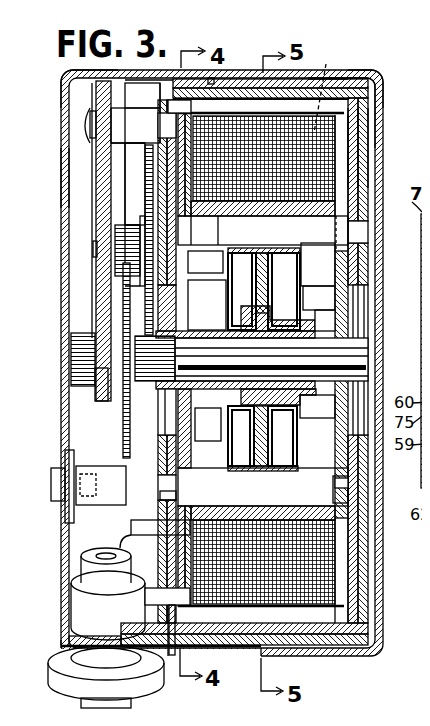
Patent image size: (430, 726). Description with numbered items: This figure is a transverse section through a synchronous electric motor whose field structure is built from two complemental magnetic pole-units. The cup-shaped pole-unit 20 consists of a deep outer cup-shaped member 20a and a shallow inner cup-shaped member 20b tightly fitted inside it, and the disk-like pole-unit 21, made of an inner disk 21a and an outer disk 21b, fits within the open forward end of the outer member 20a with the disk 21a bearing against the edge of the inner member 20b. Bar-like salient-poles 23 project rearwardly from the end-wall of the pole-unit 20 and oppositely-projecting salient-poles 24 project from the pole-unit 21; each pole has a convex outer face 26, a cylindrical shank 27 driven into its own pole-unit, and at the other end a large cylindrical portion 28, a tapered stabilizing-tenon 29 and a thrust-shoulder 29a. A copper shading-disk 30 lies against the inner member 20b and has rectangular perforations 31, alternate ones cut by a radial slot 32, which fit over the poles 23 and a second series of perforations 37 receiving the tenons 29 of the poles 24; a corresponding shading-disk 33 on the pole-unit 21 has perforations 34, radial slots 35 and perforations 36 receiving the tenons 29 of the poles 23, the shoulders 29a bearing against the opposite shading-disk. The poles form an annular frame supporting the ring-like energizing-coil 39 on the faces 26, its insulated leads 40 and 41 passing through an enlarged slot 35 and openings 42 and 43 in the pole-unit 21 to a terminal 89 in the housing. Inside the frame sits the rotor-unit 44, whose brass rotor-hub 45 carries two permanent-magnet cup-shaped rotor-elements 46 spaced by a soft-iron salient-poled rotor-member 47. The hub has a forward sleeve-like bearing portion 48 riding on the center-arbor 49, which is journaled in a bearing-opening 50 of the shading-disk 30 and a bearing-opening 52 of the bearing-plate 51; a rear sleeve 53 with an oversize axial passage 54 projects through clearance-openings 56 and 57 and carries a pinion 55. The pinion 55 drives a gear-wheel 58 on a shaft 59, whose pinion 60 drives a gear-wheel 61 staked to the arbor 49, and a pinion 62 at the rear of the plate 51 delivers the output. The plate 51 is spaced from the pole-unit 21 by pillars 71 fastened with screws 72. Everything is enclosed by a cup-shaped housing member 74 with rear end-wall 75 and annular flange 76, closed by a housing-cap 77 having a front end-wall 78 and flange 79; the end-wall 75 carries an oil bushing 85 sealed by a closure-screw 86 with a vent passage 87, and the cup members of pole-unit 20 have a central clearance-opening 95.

The cup-shaped pole-unit 20 is at (369, 78).
The outer cup-shaped member 20a is at (361, 124).
The inner cup-shaped member 20b is at (351, 151).
The disk-like pole-unit 21 is at (163, 88).
The inner disk 21a is at (222, 78).
The outer disk 21b is at (153, 138).
The salient-poles 23 is at (294, 272).
The salient-poles 24 is at (231, 457).
The convex outer face 26 is at (283, 208).
The cylindrical shank 27 is at (361, 226).
The cylindrical portion 28 is at (380, 515).
The stabilizing-tenon 29 is at (181, 233).
The thrust-shoulder 29a is at (268, 377).
The shading-disk 30 is at (347, 72).
The rectangular perforations 31 is at (333, 242).
The radial slot 32 is at (338, 169).
The shading-disk 33 is at (150, 453).
The polygonal perforations 34 is at (158, 486).
The radial slot 35 is at (150, 559).
The perforations 36 is at (135, 214).
The perforations 37 is at (338, 479).
The energizing-coil 39 is at (329, 88).
The insulated lead 40 is at (123, 518).
The insulated lead 41 is at (174, 628).
The opening 42 is at (118, 556).
The opening 43 is at (161, 650).
The rotor-unit 44 is at (294, 285).
The rotor-hub 45 is at (295, 393).
The cup-shaped rotor-elements 46 is at (282, 462).
The salient-poled rotor-member 47 is at (257, 462).
The sleeve-like bearing portion 48 is at (315, 337).
The center-arbor 49 is at (320, 370).
The bearing-opening 50 is at (345, 348).
The bearing-plate 51 is at (88, 207).
The bearing-opening 52 is at (97, 387).
The sleeve 53 is at (235, 309).
The axial passage 54 is at (212, 323).
The pinion 55 is at (133, 378).
The clearance-opening 56 is at (181, 396).
The clearance-opening 57 is at (150, 420).
The gear-wheel 58 is at (138, 170).
The shaft 59 is at (85, 240).
The pinion 60 is at (123, 217).
The gear-wheel 61 is at (112, 298).
The pinion 62 is at (71, 332).
The pillars 71 is at (142, 95).
The screws 72 is at (82, 120).
The cup-shaped housing member 74 is at (58, 74).
The rear end-wall 75 is at (57, 163).
The annular flange 76 is at (202, 72).
The housing-cap 77 is at (371, 65).
The front end-wall 78 is at (377, 100).
The annular flange 79 is at (324, 87).
The bushing 85 is at (100, 458).
The closure-screw 86 is at (47, 461).
The vent passage 87 is at (78, 466).
The terminal 89 is at (63, 684).
The central clearance-opening 95 is at (357, 324).